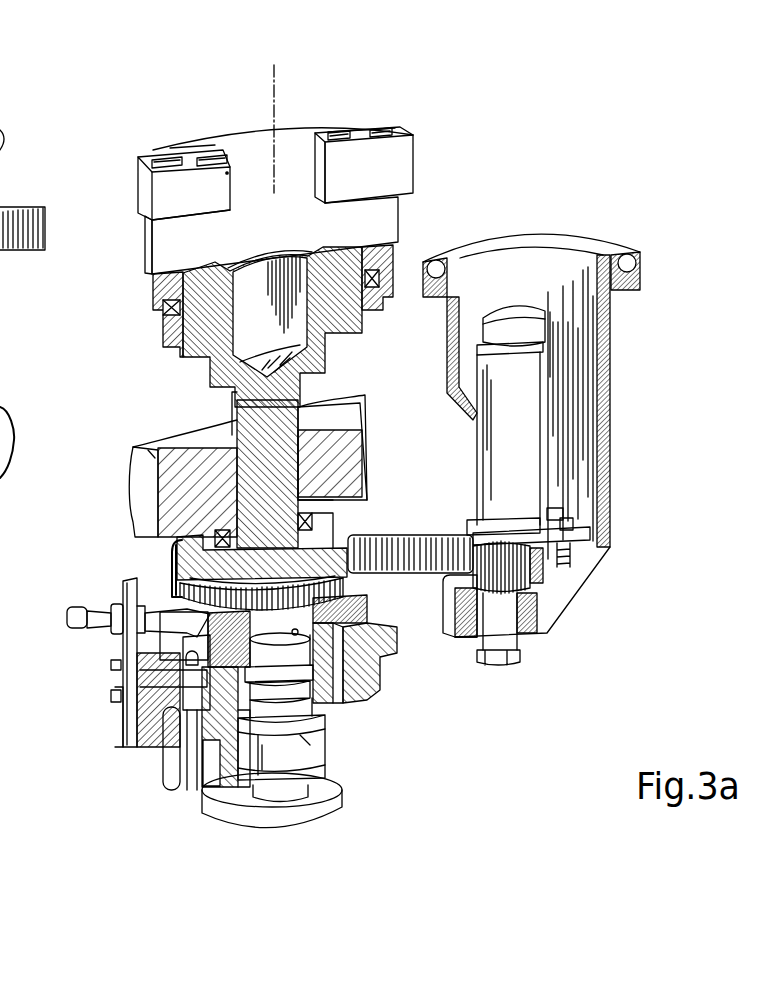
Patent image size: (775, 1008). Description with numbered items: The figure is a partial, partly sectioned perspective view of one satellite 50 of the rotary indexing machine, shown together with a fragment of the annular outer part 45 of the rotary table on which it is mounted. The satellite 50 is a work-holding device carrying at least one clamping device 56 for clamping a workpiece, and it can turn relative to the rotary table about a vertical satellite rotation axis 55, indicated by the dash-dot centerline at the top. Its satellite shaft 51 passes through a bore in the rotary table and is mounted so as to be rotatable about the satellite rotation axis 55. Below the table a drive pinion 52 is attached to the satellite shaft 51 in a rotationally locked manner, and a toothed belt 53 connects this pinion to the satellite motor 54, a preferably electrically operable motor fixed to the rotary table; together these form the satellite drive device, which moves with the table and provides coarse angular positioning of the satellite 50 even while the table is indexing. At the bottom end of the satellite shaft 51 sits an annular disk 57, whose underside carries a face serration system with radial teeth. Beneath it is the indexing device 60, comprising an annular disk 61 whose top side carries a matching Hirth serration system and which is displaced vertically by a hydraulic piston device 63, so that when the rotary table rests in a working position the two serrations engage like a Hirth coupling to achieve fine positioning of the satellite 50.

The annular outer part 45 is at (150, 448).
The satellite 50 is at (160, 128).
The satellite shaft 51 is at (235, 400).
The drive pinion 52 is at (177, 540).
The toothed belt 53 is at (412, 532).
The satellite motor 54 is at (525, 430).
The satellite rotation axis 55 is at (277, 76).
The clamping device 56 is at (315, 160).
The annular disk 57 is at (180, 582).
The indexing device 60 is at (120, 791).
The annular disk 61 is at (175, 615).
The hydraulic piston device 63 is at (330, 742).